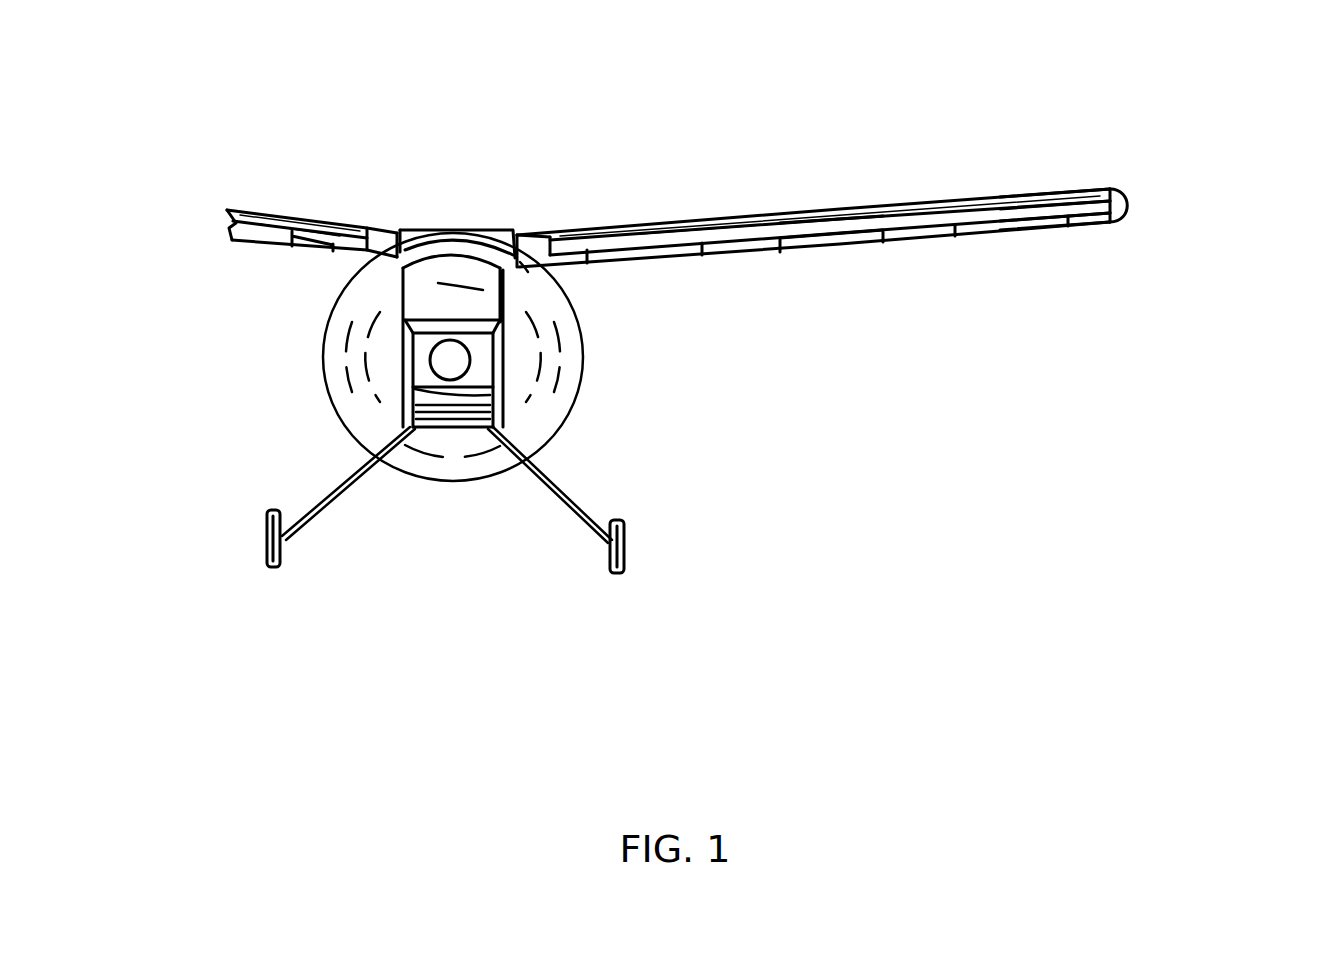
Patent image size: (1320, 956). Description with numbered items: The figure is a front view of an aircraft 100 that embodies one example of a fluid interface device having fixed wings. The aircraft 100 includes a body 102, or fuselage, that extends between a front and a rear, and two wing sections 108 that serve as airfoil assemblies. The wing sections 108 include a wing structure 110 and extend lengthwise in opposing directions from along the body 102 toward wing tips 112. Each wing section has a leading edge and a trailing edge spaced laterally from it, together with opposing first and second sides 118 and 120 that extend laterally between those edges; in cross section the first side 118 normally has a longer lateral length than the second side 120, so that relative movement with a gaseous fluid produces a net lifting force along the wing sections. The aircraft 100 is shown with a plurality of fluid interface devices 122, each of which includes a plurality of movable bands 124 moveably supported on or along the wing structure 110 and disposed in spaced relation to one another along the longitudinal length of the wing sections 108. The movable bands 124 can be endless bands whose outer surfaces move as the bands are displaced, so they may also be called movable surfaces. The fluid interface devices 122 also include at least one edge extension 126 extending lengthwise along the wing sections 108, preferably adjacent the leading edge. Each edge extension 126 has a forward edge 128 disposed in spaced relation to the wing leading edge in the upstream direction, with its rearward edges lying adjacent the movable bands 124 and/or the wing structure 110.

The aircraft 100 is at (648, 108).
The body 102 is at (396, 355).
The wing sections 108 is at (270, 180).
The wing structure 110 is at (378, 229).
The wing tips 112 is at (1137, 202).
The first side 118 is at (1030, 190).
The second side 120 is at (1037, 232).
The fluid interface devices 122 is at (804, 243).
The movable bands 124 is at (262, 247).
The edge extension 126 is at (297, 244).
The forward edge 128 is at (320, 223).